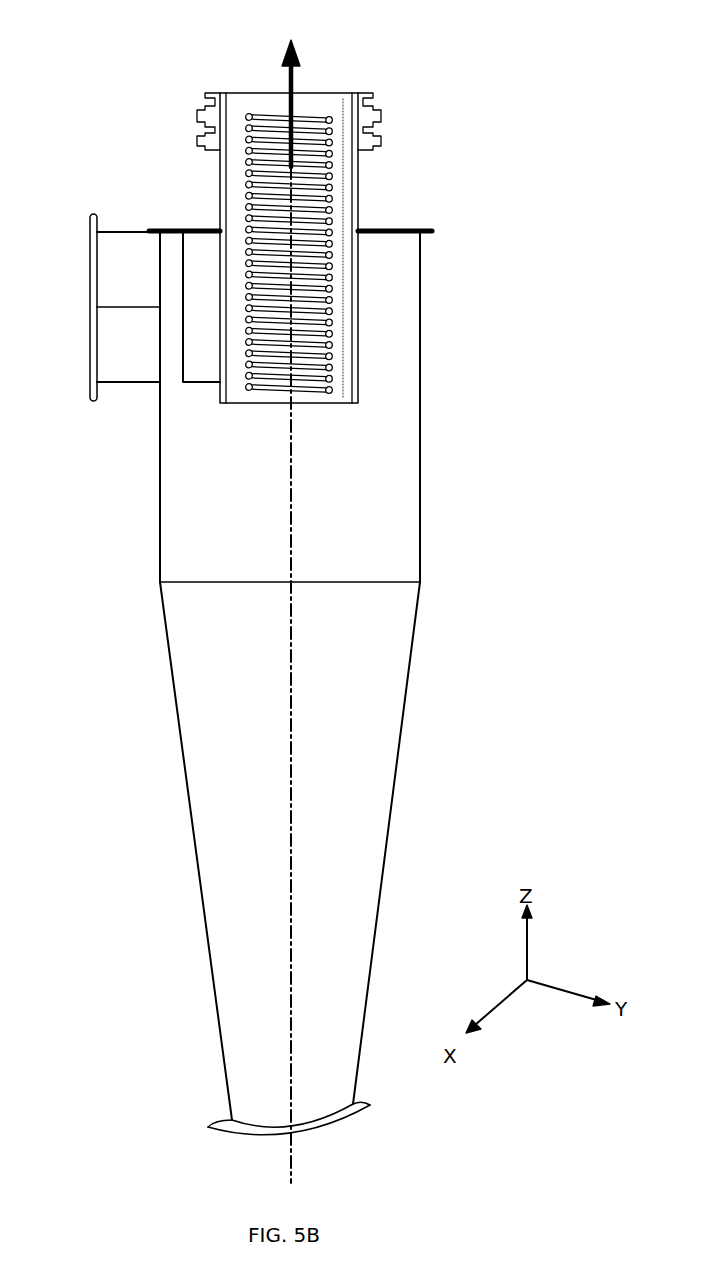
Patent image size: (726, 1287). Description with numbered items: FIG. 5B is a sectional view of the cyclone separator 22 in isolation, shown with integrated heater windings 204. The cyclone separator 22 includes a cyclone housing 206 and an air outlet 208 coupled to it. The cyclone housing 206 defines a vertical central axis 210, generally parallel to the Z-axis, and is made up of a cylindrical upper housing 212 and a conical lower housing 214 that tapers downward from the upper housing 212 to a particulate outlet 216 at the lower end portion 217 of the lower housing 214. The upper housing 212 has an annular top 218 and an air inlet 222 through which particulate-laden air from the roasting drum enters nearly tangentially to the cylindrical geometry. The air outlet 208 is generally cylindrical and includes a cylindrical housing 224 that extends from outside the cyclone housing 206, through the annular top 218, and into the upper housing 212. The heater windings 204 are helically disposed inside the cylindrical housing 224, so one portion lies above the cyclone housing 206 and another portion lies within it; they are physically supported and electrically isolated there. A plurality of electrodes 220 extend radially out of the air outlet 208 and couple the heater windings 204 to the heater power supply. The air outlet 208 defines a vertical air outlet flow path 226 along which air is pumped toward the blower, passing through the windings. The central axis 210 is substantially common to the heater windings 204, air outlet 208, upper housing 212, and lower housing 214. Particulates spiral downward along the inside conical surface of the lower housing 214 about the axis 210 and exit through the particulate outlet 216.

The cyclone separator 22 is at (440, 140).
The heater windings 204 is at (330, 363).
The cyclone housing 206 is at (420, 582).
The air outlet 208 is at (358, 207).
The central axis 210 is at (292, 768).
The cylindrical upper housing 212 is at (420, 437).
The conical lower housing 214 is at (378, 900).
The particulate outlet 216 is at (325, 1125).
The lower end portion 217 is at (245, 1104).
The annular top 218 is at (178, 225).
The electrodes 220 is at (195, 114).
The air inlet 222 is at (95, 287).
The cylindrical housing 224 is at (360, 307).
The air outlet flow path 226 is at (292, 82).